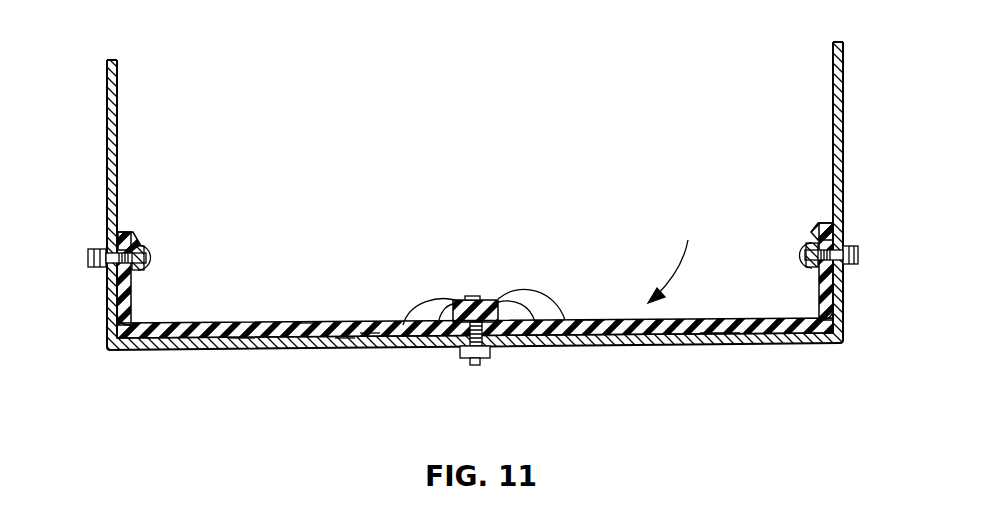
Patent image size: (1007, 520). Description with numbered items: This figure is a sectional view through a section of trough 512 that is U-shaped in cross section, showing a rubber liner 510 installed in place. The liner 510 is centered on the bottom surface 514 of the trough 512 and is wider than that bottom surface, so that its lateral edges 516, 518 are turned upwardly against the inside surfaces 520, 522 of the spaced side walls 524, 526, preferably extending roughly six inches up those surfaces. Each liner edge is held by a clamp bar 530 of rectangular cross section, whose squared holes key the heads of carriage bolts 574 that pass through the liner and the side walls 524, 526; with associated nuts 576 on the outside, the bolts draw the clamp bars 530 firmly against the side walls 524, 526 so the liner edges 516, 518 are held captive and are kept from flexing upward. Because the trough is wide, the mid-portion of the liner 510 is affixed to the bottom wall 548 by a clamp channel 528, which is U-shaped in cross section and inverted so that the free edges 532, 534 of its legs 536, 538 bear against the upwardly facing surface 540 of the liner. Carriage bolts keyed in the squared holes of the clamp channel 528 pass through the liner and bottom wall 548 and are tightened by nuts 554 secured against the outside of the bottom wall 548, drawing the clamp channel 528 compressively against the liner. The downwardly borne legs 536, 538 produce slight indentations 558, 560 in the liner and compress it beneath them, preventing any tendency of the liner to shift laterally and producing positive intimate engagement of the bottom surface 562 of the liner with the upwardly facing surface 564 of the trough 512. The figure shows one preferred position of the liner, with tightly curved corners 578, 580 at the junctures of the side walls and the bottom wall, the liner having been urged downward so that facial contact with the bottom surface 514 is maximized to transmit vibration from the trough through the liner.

The liner 510 is at (679, 260).
The trough 512 is at (748, 342).
The bottom surface 514 is at (633, 340).
The lateral edge 516 is at (847, 298).
The lateral edge 518 is at (125, 295).
The inside surface 520 is at (835, 137).
The inside surface 522 is at (117, 130).
The side wall 524 is at (843, 63).
The side wall 526 is at (117, 80).
The clamp channel 528 is at (588, 345).
The clamp bar 530 is at (137, 243).
The free edge 532 is at (438, 325).
The free edge 534 is at (508, 345).
The leg 536 is at (368, 348).
The leg 538 is at (563, 322).
The upwardly facing surface 540 is at (303, 337).
The bottom wall 548 is at (719, 338).
The nut 554 is at (463, 357).
The indentation 558 is at (535, 322).
The indentation 560 is at (403, 325).
The bottom surface 562 is at (342, 350).
The upwardly facing surface 564 is at (242, 352).
The carriage bolt 574 is at (813, 280).
The nut 576 is at (104, 252).
The corner 578 is at (820, 342).
The corner 580 is at (120, 313).